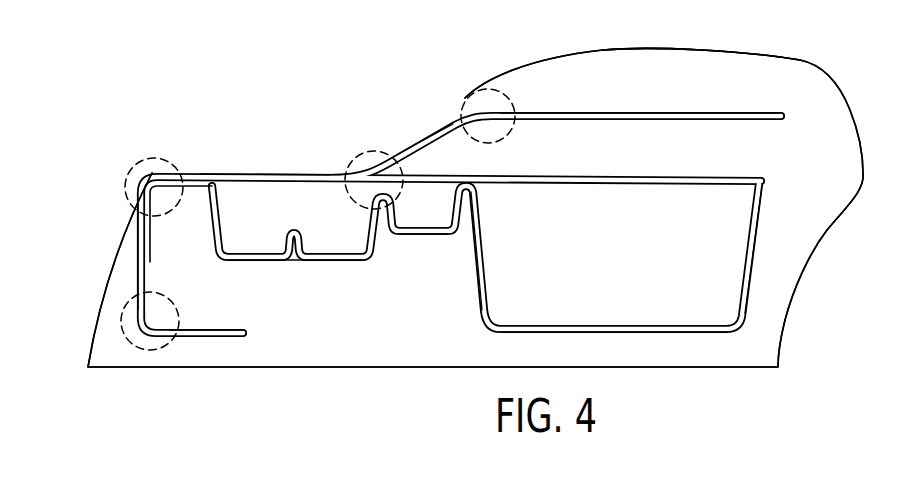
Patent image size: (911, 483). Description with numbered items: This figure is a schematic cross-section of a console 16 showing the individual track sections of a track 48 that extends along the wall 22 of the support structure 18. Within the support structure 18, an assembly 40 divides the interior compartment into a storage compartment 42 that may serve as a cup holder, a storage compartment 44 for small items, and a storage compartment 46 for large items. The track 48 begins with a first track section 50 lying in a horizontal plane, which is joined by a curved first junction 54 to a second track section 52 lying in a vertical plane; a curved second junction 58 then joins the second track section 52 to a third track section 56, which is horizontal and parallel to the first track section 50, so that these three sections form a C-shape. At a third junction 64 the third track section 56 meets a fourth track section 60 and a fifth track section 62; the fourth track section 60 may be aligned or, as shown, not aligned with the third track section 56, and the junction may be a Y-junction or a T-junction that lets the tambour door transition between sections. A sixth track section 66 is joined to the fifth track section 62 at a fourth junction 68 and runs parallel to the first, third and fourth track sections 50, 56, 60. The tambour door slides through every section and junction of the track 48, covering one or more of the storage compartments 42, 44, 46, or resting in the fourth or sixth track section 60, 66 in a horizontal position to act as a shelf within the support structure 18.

The console 16 is at (141, 99).
The support structure 18 is at (852, 116).
The wall 22 is at (747, 50).
The assembly 40 is at (480, 289).
The storage compartment 42 is at (250, 240).
The storage compartment 44 is at (422, 233).
The storage compartment 46 is at (627, 313).
The track 48 is at (306, 82).
The first track section 50 is at (206, 337).
The second track section 52 is at (136, 256).
The first junction 54 is at (128, 340).
The third track section 56 is at (258, 176).
The second junction 58 is at (158, 157).
The fourth track section 60 is at (660, 183).
The fifth track section 62 is at (430, 138).
The third junction 64 is at (375, 150).
The sixth track section 66 is at (641, 113).
The fourth junction 68 is at (490, 88).